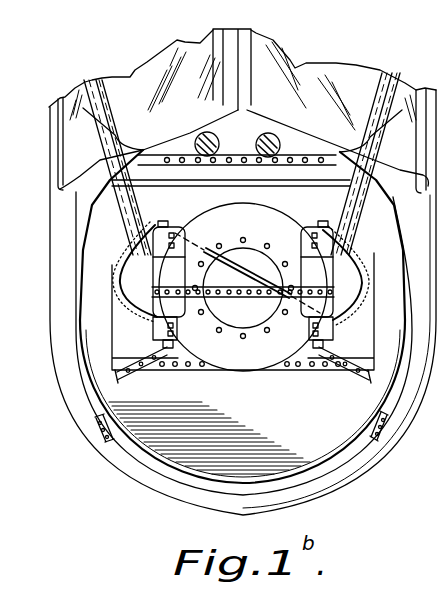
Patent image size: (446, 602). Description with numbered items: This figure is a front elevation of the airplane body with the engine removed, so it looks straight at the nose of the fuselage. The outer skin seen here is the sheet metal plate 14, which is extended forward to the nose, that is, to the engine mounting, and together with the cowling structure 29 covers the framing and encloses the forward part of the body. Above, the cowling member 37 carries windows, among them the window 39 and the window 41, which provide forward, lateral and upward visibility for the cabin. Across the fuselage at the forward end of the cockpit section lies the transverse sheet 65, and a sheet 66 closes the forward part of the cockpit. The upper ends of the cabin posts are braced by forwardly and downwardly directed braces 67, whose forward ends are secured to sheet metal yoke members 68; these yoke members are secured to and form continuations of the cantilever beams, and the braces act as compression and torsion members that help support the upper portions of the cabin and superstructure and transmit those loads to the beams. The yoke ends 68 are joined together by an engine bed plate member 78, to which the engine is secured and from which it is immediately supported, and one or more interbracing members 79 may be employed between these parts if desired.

The sheet metal plate 14 is at (187, 507).
The cowling structure 29 is at (63, 323).
The cowling member 37 is at (246, 33).
The window 39 is at (63, 187).
The window 41 is at (145, 92).
The transverse sheet 65 is at (243, 288).
The sheet 66 is at (231, 168).
The brace 67 is at (165, 227).
The yoke member 68 is at (160, 363).
The engine bed plate member 78 is at (253, 353).
The interbracing member 79 is at (242, 260).